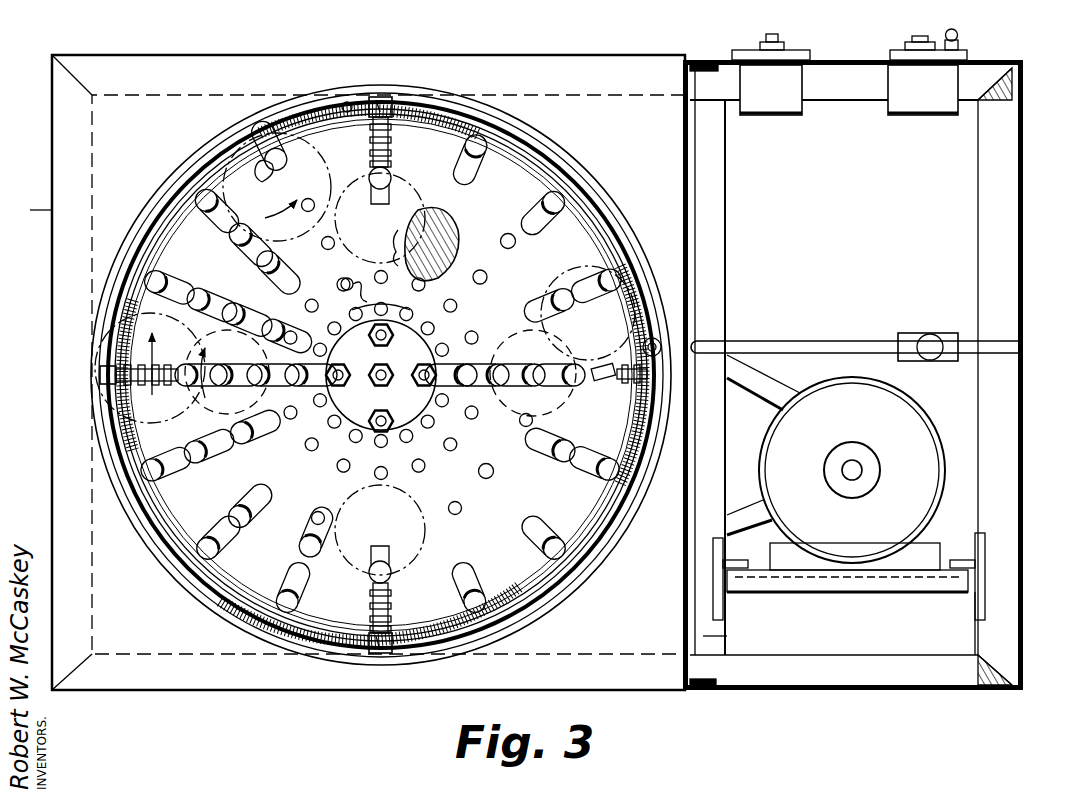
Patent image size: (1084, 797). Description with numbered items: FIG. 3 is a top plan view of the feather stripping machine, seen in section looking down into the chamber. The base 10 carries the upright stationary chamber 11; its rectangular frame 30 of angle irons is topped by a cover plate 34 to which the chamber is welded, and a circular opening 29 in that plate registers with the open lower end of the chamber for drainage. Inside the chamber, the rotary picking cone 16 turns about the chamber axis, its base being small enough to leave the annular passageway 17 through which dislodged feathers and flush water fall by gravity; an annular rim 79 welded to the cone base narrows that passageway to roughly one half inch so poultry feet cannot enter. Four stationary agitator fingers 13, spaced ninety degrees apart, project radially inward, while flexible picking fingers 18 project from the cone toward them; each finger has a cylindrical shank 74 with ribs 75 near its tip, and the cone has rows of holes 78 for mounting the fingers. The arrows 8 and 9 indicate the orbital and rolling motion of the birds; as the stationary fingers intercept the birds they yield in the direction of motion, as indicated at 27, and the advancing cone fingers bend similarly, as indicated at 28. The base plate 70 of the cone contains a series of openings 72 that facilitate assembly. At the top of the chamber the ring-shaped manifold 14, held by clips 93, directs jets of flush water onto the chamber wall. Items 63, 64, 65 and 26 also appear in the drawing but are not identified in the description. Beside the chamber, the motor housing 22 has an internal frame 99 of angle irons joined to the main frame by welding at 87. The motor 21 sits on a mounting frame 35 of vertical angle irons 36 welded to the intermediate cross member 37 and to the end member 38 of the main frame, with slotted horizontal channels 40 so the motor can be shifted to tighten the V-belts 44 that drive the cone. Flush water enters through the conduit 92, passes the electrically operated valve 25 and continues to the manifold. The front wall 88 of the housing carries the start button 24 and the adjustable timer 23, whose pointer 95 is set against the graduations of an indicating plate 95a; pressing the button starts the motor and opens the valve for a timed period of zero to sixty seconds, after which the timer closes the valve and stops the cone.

The base 10 is at (160, 693).
The stationary chamber 11 is at (167, 180).
The stationary agitator fingers 13 is at (392, 150).
The manifold 14 is at (585, 208).
The rotary picking cone 16 is at (512, 188).
The annular passageway 17 is at (195, 578).
The annular rim 79 is at (238, 615).
The circular opening 29 is at (151, 534).
The rectangular frame 30 is at (27, 211).
The cover plate 34 is at (621, 640).
The clips 93 is at (388, 100).
The ribs 75 is at (372, 600).
The cylindrical shank 74 is at (389, 572).
The yielding of stationary fingers 27 is at (602, 386).
The hub 63 is at (420, 350).
The center nut 64 is at (386, 380).
The hub nuts 65 is at (377, 418).
The holes 78 is at (508, 241).
The picking fingers 18 is at (248, 262).
The bending of cone fingers 28 is at (277, 179).
The openings 72 is at (424, 226).
The base plate 70 is at (445, 240).
The zone circle 26 is at (312, 234).
The arrow indicating rolling motion 9 is at (216, 336).
The arrow indicating orbital motion 8 is at (375, 290).
The motor housing 22 is at (1023, 230).
The internal frame 99 is at (1016, 78).
The welding 87 is at (1010, 91).
The end member 38 is at (996, 442).
The front wall 88 is at (855, 58).
The start button 24 is at (772, 42).
The adjustable pointer 95 is at (898, 56).
The adjustable timer 23 is at (911, 38).
The indicating plate 95a is at (960, 56).
The electrically operated valve 25 is at (933, 334).
The conduit 92 is at (1023, 347).
The V-belts 44 is at (775, 389).
The motor 21 is at (905, 428).
The vertical angle irons 36 is at (734, 565).
The horizontal channels 40 is at (916, 592).
The mounting frame 35 is at (872, 596).
The intermediate cross member 37 is at (727, 636).